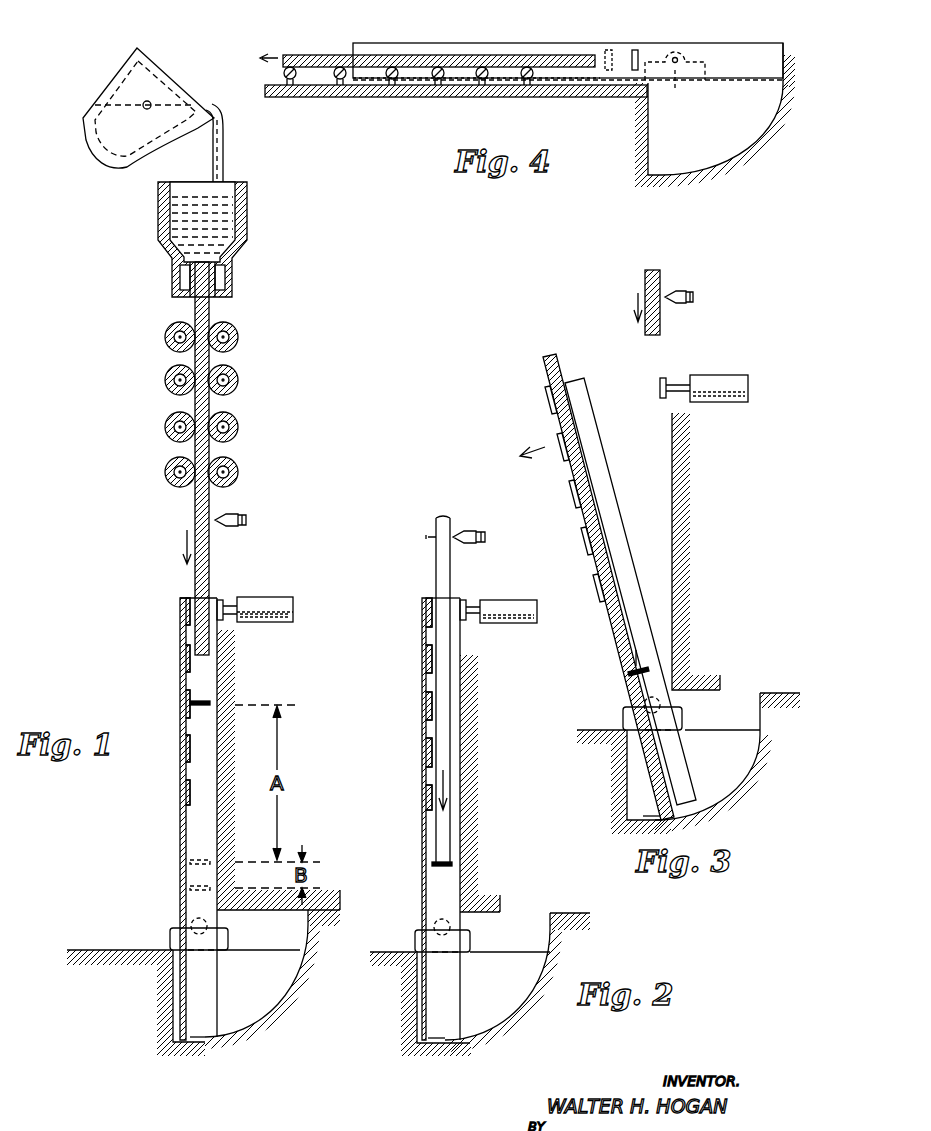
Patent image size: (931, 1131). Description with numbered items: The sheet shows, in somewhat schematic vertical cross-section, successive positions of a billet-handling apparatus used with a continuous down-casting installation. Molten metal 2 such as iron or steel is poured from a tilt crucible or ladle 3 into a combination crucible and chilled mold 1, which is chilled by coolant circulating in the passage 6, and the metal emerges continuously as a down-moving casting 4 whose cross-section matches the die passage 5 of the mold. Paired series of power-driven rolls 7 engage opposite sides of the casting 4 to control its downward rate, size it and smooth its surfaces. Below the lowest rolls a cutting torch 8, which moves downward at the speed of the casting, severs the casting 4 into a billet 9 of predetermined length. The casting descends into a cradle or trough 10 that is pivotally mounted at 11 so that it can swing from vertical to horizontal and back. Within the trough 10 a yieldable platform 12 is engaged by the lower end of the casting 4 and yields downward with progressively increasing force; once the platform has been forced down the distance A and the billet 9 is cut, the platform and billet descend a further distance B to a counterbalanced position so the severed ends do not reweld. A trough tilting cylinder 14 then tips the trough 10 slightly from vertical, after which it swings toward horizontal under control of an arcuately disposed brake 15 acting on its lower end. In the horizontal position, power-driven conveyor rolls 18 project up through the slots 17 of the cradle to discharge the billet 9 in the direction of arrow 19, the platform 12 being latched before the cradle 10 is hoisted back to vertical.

In FIG. 1, the combination crucible and chilled mold 1 is at (249, 216).
In FIG. 1, the molten metal 2 is at (224, 145).
In FIG. 1, the tilt crucible or ladle 3 is at (118, 88).
In FIG. 1, the down-moving casting 4 is at (212, 313).
In FIG. 3, the down-moving casting 4 is at (647, 302).
In FIG. 4, the down-moving casting 4 is at (439, 61).
In FIG. 1, the die passage 5 is at (218, 284).
In FIG. 1, the coolant passage 6 is at (226, 266).
In FIG. 1, the power-driven rolls 7 is at (165, 335).
In FIG. 1, the cutting torch 8 is at (238, 516).
In FIG. 2, the cutting torch 8 is at (474, 532).
In FIG. 3, the cutting torch 8 is at (688, 291).
In FIG. 2, the billet 9 is at (441, 560).
In FIG. 3, the billet 9 is at (600, 525).
In FIG. 4, the billet 9 is at (412, 84).
In FIG. 1, the cradle or trough 10 is at (180, 825).
In FIG. 2, the cradle or trough 10 is at (420, 819).
In FIG. 3, the cradle or trough 10 is at (612, 632).
In FIG. 4, the cradle or trough 10 is at (593, 94).
In FIG. 1, the pivot 11 is at (192, 920).
In FIG. 2, the pivot 11 is at (436, 922).
In FIG. 3, the pivot 11 is at (644, 700).
In FIG. 4, the pivot 11 is at (675, 87).
In FIG. 1, the yieldable platform 12 is at (210, 700).
In FIG. 2, the yieldable platform 12 is at (447, 866).
In FIG. 3, the yieldable platform 12 is at (640, 655).
In FIG. 4, the yieldable platform 12 is at (632, 72).
In FIG. 1, the trough tilting cylinder 14 is at (265, 610).
In FIG. 2, the trough tilting cylinder 14 is at (512, 624).
In FIG. 3, the trough tilting cylinder 14 is at (720, 385).
In FIG. 1, the brake 15 is at (272, 1010).
In FIG. 2, the brake 15 is at (526, 1010).
In FIG. 3, the brake 15 is at (738, 780).
In FIG. 4, the brake 15 is at (725, 160).
In FIG. 1, the slots 17 is at (188, 638).
In FIG. 2, the slots 17 is at (428, 686).
In FIG. 3, the slots 17 is at (574, 486).
In FIG. 4, the slots 17 is at (503, 84).
In FIG. 4, the power-driven conveyor rolls 18 is at (283, 74).
In FIG. 4, the arrow 19 is at (281, 55).